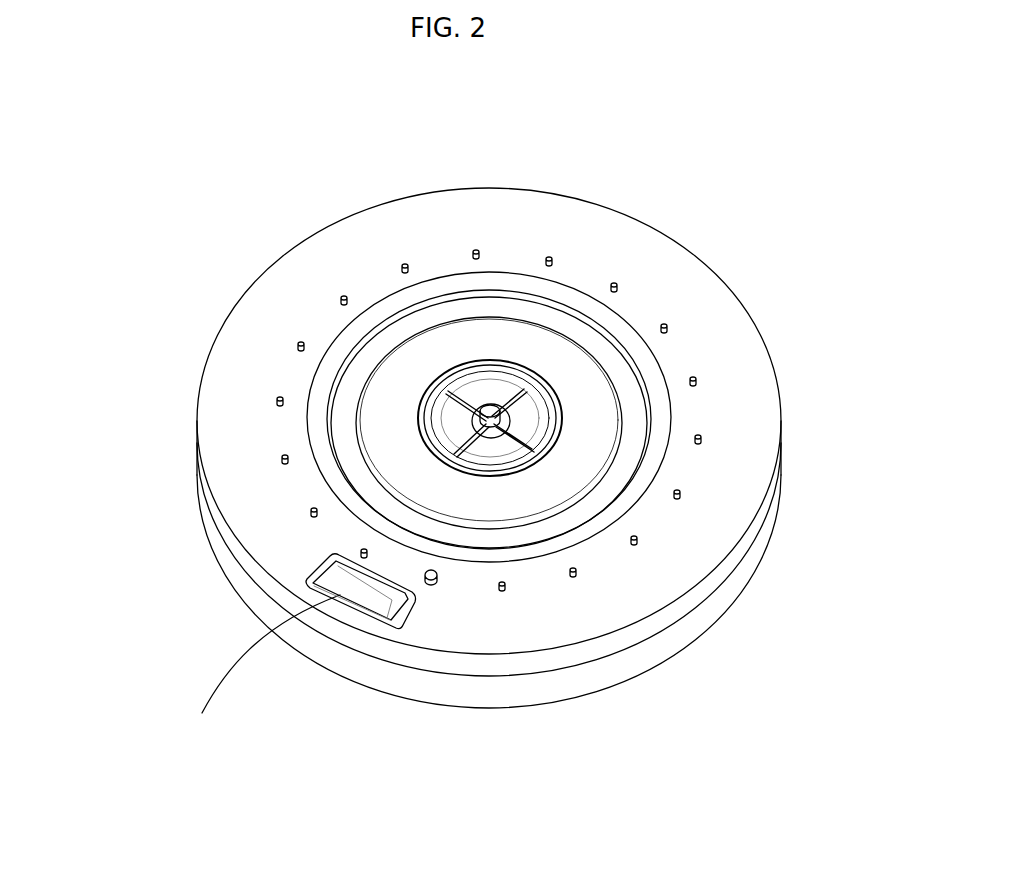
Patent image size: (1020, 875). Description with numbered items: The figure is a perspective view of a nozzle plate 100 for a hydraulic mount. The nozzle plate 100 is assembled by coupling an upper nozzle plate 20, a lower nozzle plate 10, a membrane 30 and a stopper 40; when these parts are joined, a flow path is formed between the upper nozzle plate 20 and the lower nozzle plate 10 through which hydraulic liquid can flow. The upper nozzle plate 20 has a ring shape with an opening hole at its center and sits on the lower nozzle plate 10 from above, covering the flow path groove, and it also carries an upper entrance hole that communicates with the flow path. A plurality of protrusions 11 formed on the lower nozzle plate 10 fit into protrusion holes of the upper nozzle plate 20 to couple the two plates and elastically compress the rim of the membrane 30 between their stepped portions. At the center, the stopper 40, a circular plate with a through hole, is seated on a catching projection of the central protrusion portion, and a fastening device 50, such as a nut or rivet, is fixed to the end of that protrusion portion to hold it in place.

The nozzle plate 100 is at (725, 126).
The lower nozzle plate 10 is at (583, 690).
The upper nozzle plate 20 is at (233, 340).
The protrusions 11 is at (667, 325).
The membrane 30 is at (598, 435).
The stopper 40 is at (523, 415).
The fastening device 50 is at (488, 412).